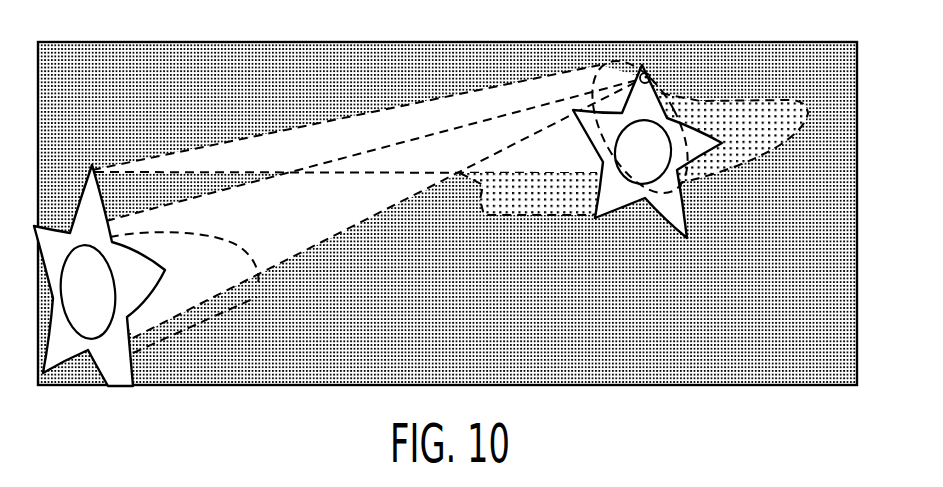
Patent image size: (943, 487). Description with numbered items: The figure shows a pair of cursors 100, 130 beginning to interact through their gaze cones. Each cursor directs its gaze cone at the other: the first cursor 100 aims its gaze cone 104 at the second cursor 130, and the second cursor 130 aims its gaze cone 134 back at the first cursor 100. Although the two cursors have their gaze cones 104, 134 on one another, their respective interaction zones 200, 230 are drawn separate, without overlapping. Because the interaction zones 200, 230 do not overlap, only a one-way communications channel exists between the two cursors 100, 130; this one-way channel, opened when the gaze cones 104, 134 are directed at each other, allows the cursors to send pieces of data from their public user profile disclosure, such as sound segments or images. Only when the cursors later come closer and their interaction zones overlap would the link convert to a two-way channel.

The cursor 100 is at (125, 376).
The gaze cone 104 is at (223, 153).
The cursor 130 is at (685, 228).
The gaze cone 134 is at (390, 197).
The interaction zone 200 is at (202, 292).
The interaction zone 230 is at (760, 151).